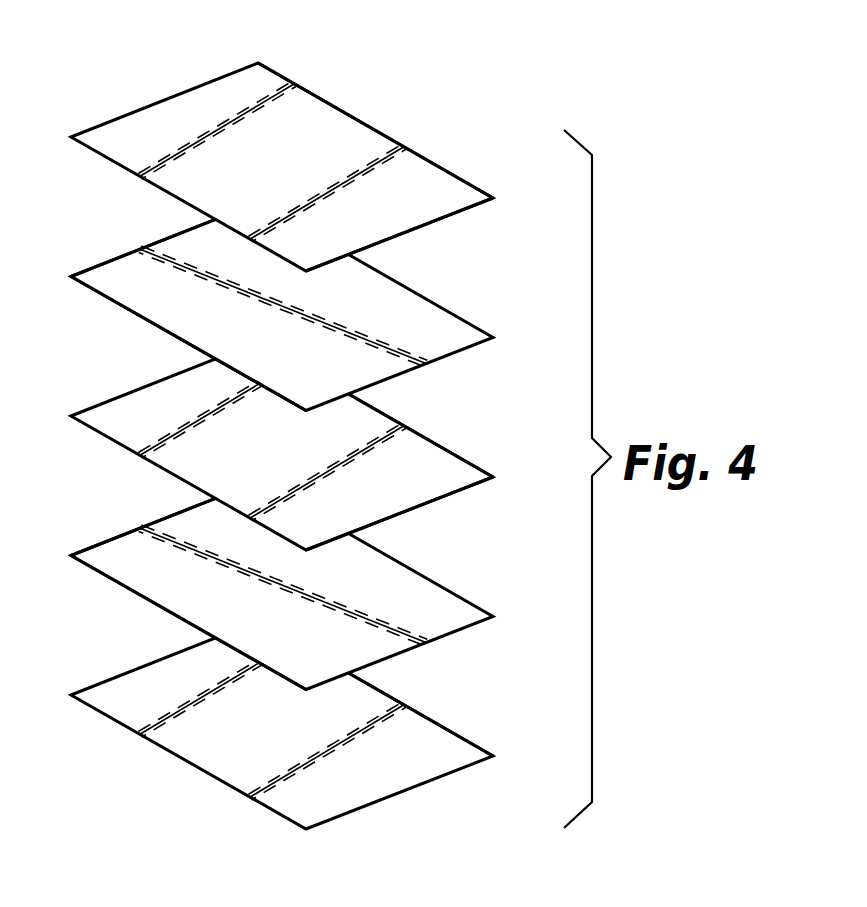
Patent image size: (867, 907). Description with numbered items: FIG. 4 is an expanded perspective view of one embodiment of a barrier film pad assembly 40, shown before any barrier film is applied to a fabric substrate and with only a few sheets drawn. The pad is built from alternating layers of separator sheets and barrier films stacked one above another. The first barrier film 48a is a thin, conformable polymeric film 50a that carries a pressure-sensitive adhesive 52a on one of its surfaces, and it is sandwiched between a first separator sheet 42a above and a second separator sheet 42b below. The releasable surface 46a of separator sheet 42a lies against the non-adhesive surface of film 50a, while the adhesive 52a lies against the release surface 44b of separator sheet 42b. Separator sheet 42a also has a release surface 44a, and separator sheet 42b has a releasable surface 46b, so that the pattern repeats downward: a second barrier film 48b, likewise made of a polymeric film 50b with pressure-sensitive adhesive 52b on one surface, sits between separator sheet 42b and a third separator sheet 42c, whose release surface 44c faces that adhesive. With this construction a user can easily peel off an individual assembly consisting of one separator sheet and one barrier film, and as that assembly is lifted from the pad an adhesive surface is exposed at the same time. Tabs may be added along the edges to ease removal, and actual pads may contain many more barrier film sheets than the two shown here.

The barrier film pad assembly 40 is at (279, 415).
The separator sheet 42a is at (299, 167).
The release surface of separator sheet 44a is at (423, 178).
The releasable surface of separator sheet 46a is at (453, 216).
The barrier film 48a is at (255, 300).
The polymeric film 50a is at (105, 280).
The pressure-sensitive adhesive 52a is at (130, 308).
The separator sheet 42b is at (306, 446).
The release surface of separator sheet 44b is at (458, 473).
The releasable surface of separator sheet 46b is at (453, 495).
The barrier film 48b is at (260, 575).
The polymeric film 50b is at (117, 563).
The pressure-sensitive adhesive 52b is at (133, 590).
The separator sheet 42c is at (305, 725).
The release surface of separator sheet 44c is at (458, 752).